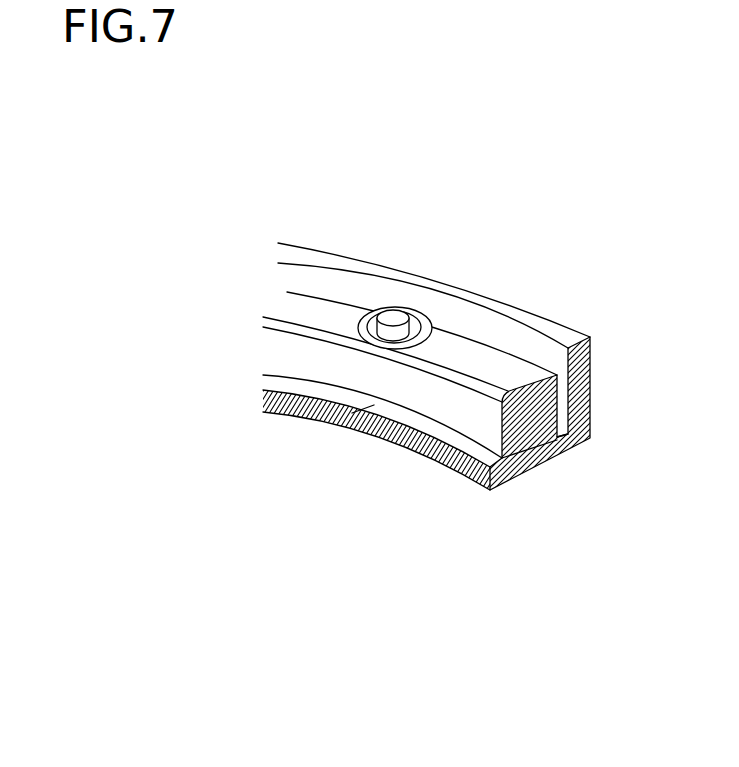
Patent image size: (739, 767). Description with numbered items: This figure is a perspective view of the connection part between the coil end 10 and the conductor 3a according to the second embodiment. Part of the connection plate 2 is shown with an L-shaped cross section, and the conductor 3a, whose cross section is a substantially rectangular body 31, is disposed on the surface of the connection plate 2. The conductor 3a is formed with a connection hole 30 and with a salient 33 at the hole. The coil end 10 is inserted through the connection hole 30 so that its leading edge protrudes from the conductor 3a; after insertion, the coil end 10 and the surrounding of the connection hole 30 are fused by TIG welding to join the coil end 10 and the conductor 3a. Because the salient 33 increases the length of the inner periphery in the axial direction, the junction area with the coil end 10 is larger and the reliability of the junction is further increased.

The connection plate 2 is at (344, 425).
The conductor 3a is at (313, 307).
The coil end 10 is at (394, 310).
The connection hole 30 is at (414, 320).
The rectangular body 31 is at (555, 428).
The salient 33 is at (430, 326).